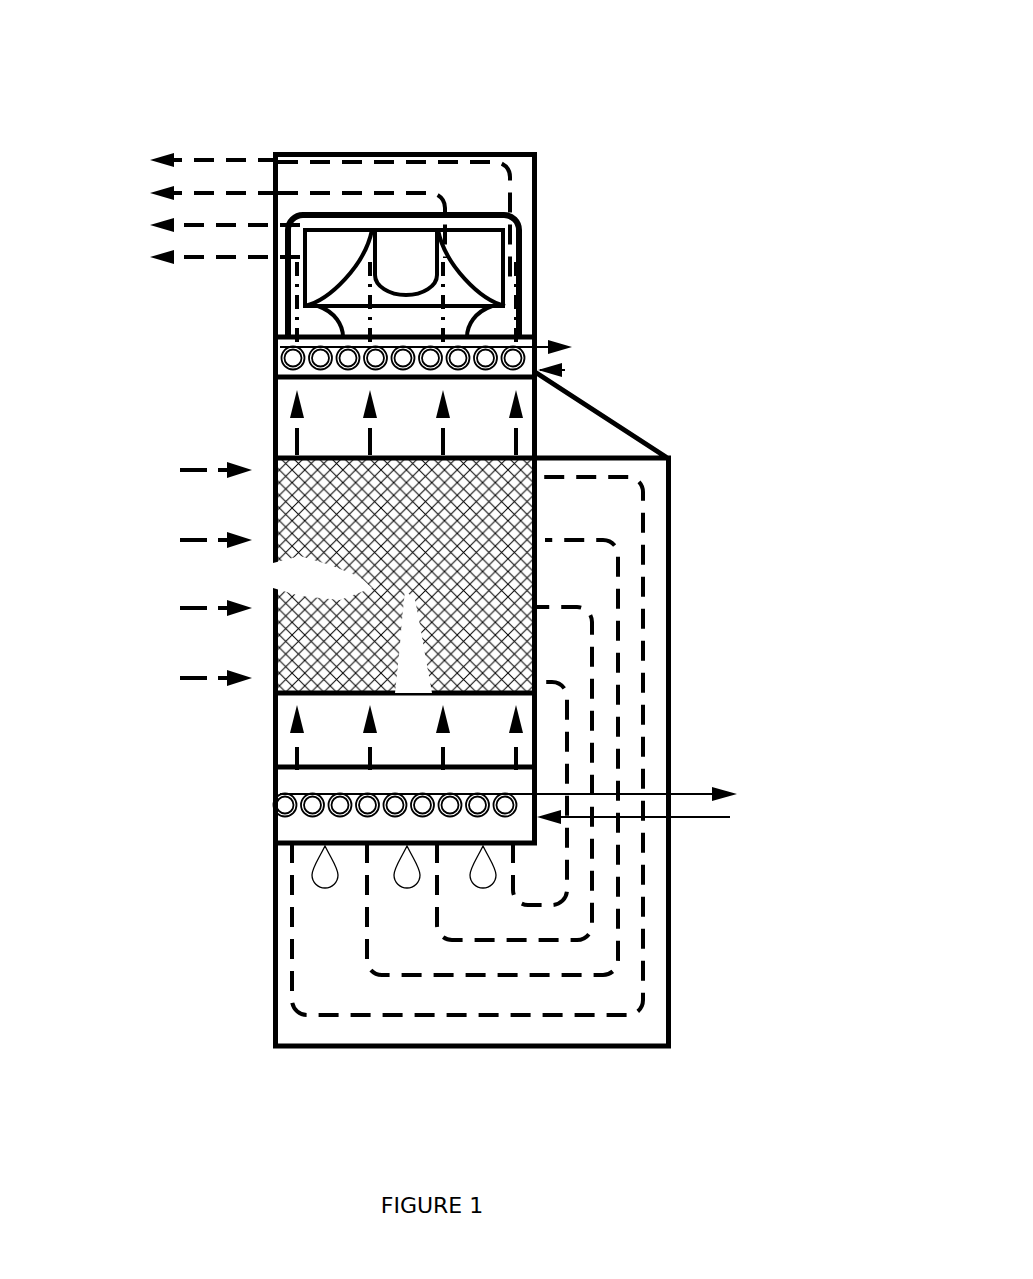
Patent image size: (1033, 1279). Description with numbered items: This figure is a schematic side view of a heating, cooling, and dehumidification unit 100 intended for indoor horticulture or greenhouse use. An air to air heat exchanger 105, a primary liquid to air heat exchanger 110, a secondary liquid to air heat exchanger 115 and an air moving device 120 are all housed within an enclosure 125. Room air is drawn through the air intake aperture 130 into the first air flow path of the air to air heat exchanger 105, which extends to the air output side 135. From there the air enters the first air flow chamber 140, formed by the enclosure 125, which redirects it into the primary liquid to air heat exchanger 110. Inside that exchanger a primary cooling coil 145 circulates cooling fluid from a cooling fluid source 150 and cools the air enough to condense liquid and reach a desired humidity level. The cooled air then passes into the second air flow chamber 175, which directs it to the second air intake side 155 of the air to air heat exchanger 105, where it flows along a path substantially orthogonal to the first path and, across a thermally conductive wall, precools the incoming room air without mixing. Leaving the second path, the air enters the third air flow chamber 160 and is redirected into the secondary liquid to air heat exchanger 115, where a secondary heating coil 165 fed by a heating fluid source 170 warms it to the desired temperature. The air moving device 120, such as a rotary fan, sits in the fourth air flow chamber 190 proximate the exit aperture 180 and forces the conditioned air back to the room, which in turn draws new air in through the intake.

The heating, cooling, and dehumidification unit 100 is at (607, 52).
The air to air heat exchanger 105 is at (405, 575).
The primary liquid to air heat exchanger 110 is at (405, 827).
The secondary liquid to air heat exchanger 115 is at (282, 345).
The air moving device 120 is at (507, 258).
The enclosure 125 is at (668, 743).
The air intake aperture 130 is at (273, 637).
The air output side 135 is at (537, 573).
The first air flow chamber 140 is at (467, 746).
The primary cooling coil 145 is at (285, 805).
The cooling fluid source 150 is at (554, 827).
The second air intake side 155 is at (385, 648).
The third air flow chamber 160 is at (431, 422).
The secondary heating coil 165 is at (282, 358).
The heating fluid source 170 is at (494, 356).
The second air flow chamber 175 is at (406, 737).
The exit aperture 180 is at (260, 190).
The fourth air flow chamber 190 is at (447, 204).